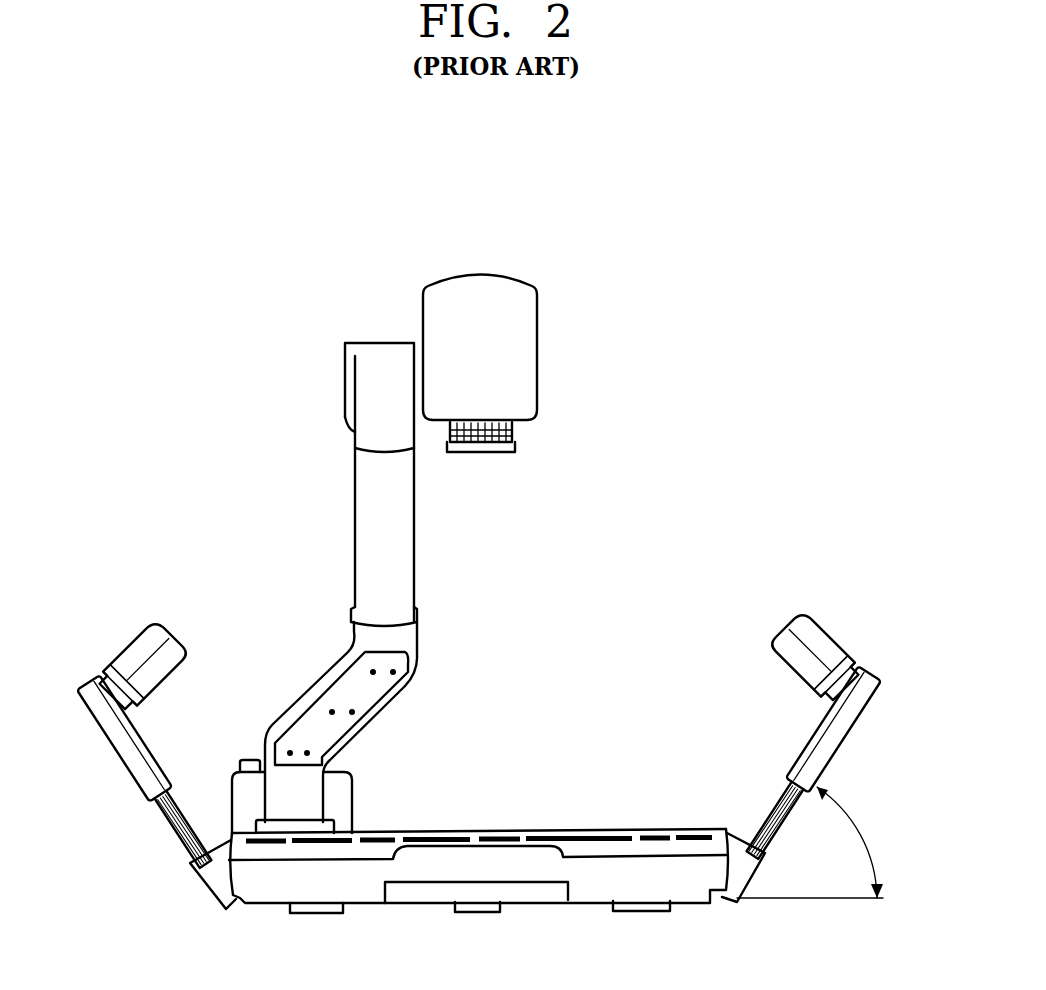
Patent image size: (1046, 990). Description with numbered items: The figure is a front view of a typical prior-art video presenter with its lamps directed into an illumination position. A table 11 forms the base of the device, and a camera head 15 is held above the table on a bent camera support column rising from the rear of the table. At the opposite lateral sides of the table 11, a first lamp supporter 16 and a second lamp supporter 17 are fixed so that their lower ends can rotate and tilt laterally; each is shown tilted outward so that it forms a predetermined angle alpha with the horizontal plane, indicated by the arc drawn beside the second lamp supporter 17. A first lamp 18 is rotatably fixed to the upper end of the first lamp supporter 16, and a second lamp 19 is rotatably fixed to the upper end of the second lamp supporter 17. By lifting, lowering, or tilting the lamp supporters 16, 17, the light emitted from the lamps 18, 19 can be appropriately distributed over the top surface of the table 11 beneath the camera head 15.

The table 11 is at (593, 836).
The camera head 15 is at (483, 288).
The first lamp supporter 16 is at (158, 777).
The second lamp supporter 17 is at (806, 773).
The first lamp 18 is at (180, 670).
The second lamp 19 is at (780, 660).